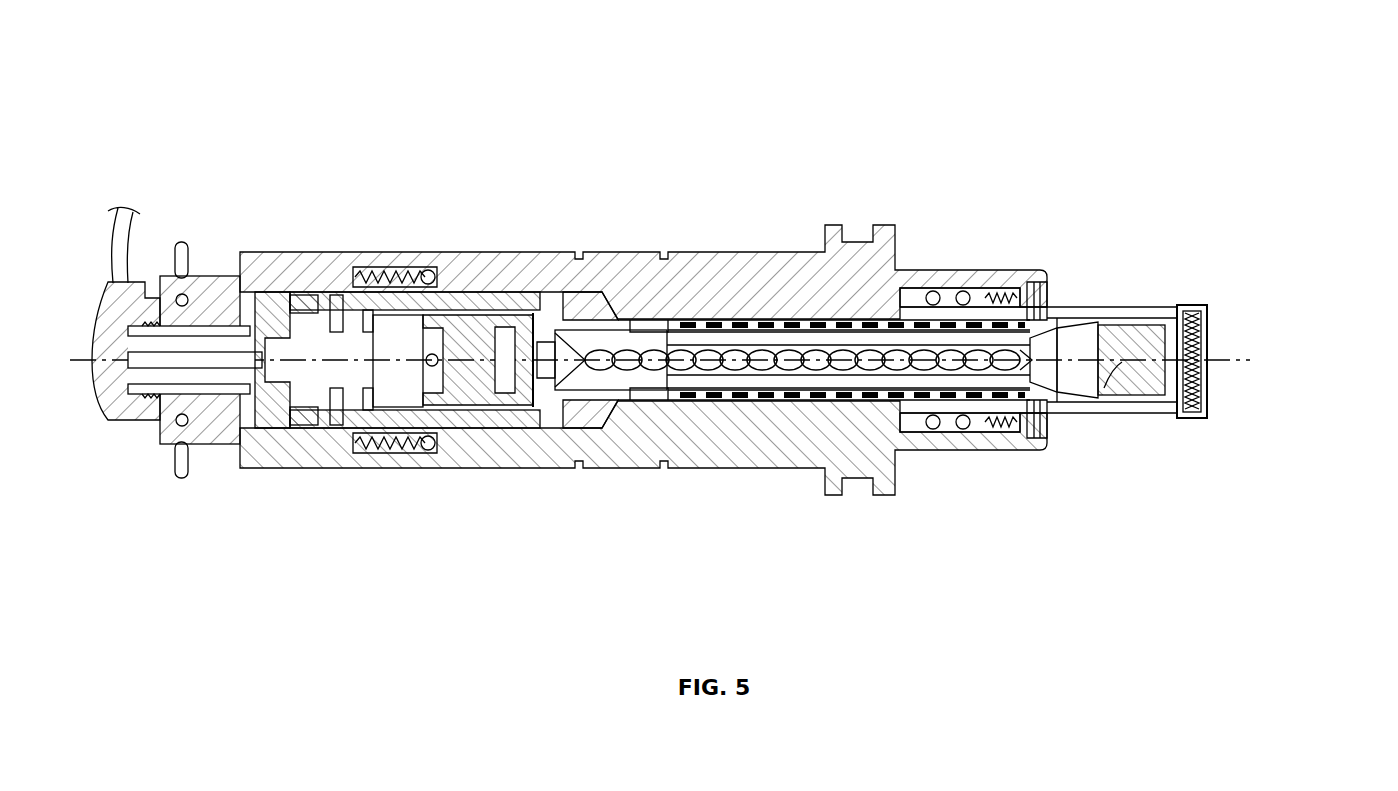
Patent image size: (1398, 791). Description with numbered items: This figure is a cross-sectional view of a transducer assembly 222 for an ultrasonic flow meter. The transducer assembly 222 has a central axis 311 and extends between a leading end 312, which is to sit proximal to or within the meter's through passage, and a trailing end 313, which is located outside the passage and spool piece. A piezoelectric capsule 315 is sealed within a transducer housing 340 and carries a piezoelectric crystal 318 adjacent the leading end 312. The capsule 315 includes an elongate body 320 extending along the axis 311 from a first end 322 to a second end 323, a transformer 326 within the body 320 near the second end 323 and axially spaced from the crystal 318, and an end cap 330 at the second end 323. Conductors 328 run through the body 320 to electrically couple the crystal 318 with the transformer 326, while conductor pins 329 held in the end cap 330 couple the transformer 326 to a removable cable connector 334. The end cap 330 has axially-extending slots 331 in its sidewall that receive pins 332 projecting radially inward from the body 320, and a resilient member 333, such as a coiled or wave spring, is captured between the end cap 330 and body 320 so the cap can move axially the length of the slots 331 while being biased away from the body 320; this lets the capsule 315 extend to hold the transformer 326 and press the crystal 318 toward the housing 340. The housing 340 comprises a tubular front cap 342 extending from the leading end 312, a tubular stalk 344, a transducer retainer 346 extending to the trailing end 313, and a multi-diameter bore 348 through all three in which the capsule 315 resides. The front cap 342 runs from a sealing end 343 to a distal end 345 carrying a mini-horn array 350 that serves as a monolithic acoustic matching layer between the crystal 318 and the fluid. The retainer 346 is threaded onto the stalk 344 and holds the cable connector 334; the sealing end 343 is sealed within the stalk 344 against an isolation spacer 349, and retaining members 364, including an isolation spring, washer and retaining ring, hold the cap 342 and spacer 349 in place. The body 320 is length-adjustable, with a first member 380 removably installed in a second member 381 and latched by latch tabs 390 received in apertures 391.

The transducer assembly 222 is at (181, 121).
The central axis 311 is at (1222, 366).
The leading end 312 is at (1197, 307).
The trailing end 313 is at (170, 450).
The piezoelectric capsule 315 is at (570, 318).
The piezoelectric crystal 318 is at (1112, 375).
The elongate body 320 is at (1090, 325).
The first end 322 is at (1145, 325).
The second end 323 is at (273, 427).
The transformer 326 is at (473, 413).
The conductors 328 is at (588, 420).
The conductor pins 329 is at (250, 382).
The end cap 330 is at (277, 305).
The axially-extending slots 331 is at (327, 427).
The pins 332 is at (335, 410).
The resilient member 333 is at (317, 413).
The cable connector 334 is at (113, 403).
The transducer housing 340 is at (263, 253).
The front cap 342 is at (1103, 308).
The sealing end 343 is at (980, 300).
The stalk 344 is at (494, 266).
The distal end 345 is at (1207, 307).
The transducer retainer 346 is at (223, 290).
The bore 348 is at (600, 433).
The isolation spacer 349 is at (910, 422).
The mini-horn array 350 is at (1196, 420).
The retaining members 364 is at (1033, 433).
The first member 380 is at (1050, 400).
The second member 381 is at (540, 407).
The latch tab 390 is at (682, 330).
The apertures 391 is at (700, 332).